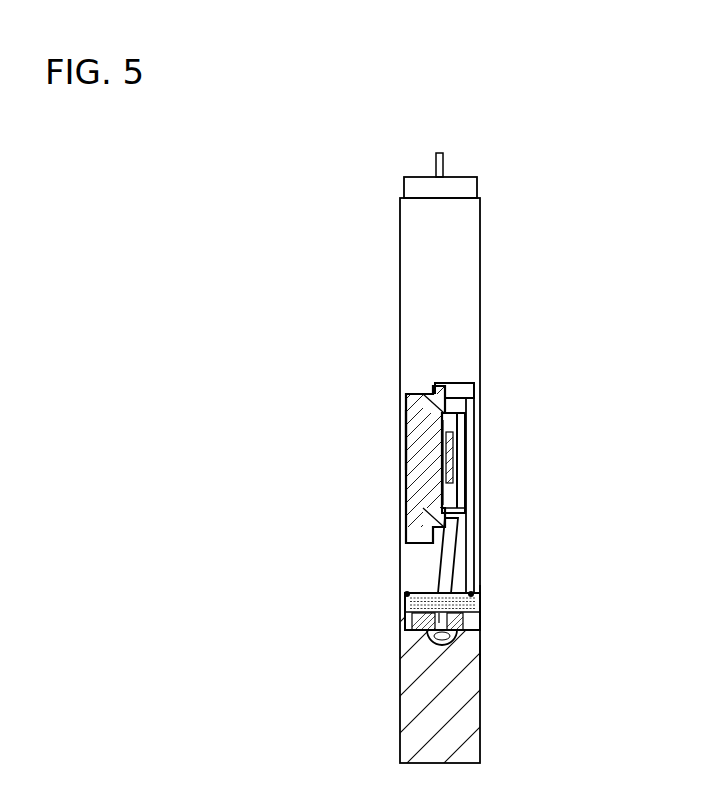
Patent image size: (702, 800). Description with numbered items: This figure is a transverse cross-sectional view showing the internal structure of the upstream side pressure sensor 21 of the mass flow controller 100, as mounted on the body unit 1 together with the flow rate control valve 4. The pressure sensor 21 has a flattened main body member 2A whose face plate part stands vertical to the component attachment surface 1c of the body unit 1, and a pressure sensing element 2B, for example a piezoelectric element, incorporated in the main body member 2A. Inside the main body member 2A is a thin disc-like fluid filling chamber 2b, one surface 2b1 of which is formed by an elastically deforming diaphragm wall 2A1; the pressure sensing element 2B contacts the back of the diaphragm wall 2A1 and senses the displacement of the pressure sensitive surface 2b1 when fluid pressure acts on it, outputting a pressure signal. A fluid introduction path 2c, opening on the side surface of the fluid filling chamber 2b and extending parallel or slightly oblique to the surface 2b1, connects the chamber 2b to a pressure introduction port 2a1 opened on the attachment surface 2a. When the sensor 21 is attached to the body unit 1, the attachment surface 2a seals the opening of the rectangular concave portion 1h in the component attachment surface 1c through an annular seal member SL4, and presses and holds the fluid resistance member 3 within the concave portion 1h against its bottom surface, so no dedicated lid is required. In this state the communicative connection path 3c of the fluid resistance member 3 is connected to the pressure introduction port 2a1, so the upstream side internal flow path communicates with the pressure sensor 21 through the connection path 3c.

The mass flow controller 100 is at (536, 216).
The body unit 1 is at (470, 705).
The component attachment surface 1c is at (480, 596).
The concave portion 1h is at (410, 628).
The main body member 2A is at (413, 383).
The diaphragm wall 2A1 is at (478, 412).
The attachment surface 2a is at (478, 598).
The pressure introduction port 2a1 is at (428, 594).
The pressure sensing element 2B is at (442, 465).
The fluid filling chamber 2b is at (470, 436).
The one surface 2b1 is at (470, 470).
The fluid introduction path 2c is at (455, 570).
The upstream side pressure sensor 21 is at (390, 437).
The fluid resistance member 3 is at (392, 603).
The communicative connection path 3c is at (430, 640).
The flow rate control valve 4 is at (400, 262).
The annular seal member SL4 is at (406, 592).